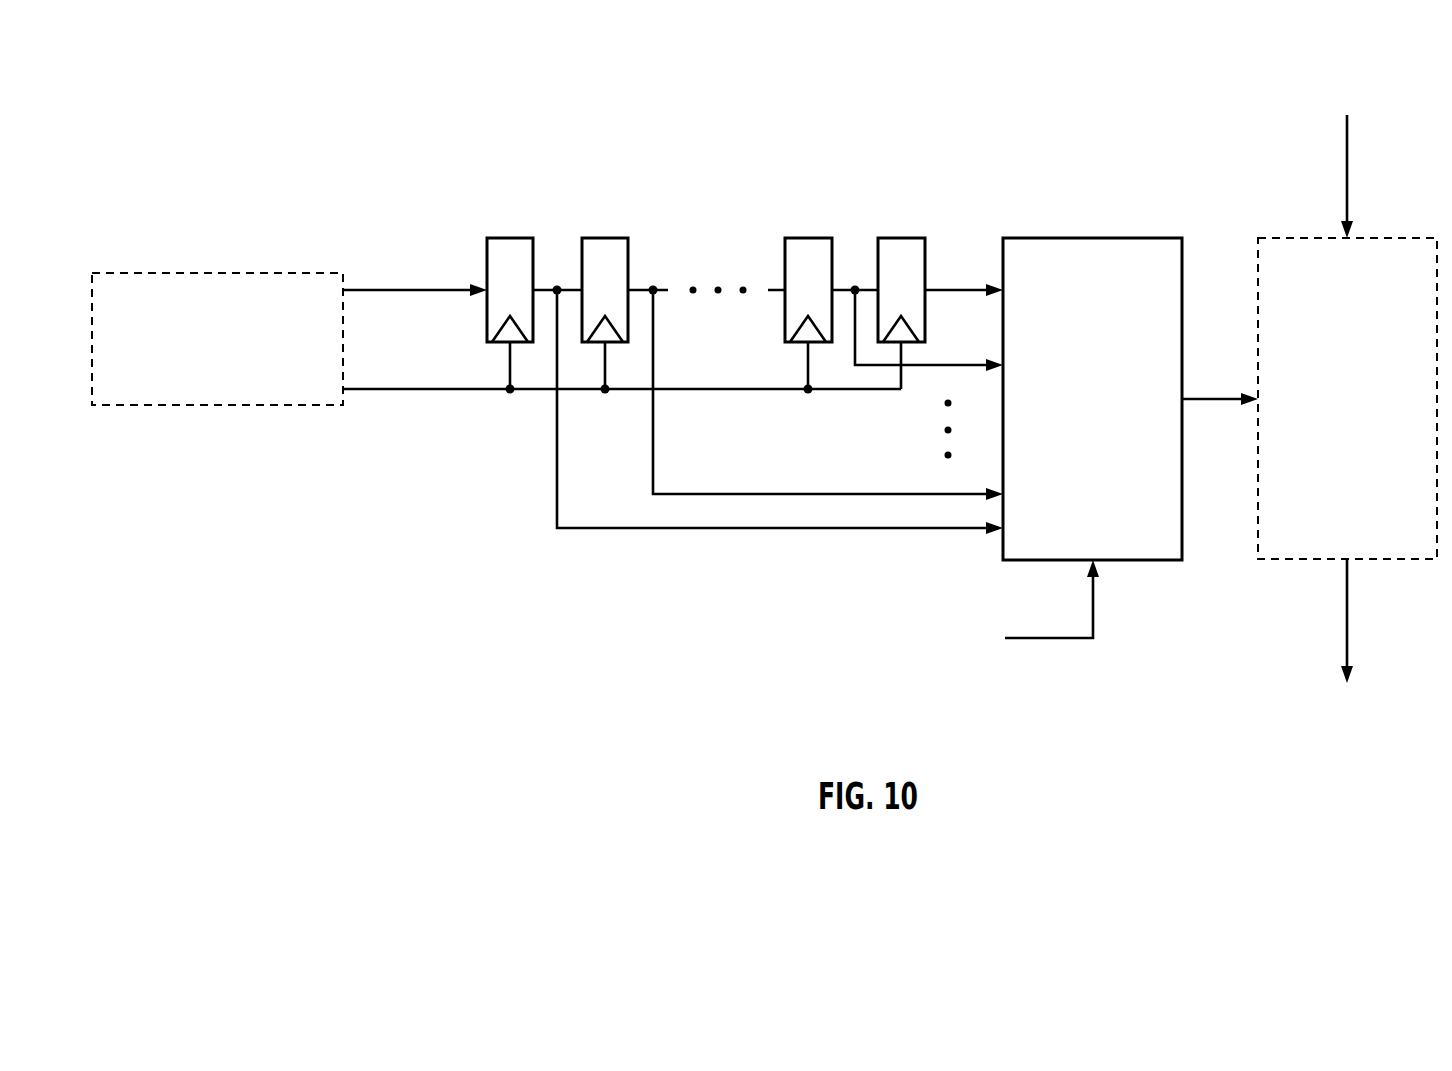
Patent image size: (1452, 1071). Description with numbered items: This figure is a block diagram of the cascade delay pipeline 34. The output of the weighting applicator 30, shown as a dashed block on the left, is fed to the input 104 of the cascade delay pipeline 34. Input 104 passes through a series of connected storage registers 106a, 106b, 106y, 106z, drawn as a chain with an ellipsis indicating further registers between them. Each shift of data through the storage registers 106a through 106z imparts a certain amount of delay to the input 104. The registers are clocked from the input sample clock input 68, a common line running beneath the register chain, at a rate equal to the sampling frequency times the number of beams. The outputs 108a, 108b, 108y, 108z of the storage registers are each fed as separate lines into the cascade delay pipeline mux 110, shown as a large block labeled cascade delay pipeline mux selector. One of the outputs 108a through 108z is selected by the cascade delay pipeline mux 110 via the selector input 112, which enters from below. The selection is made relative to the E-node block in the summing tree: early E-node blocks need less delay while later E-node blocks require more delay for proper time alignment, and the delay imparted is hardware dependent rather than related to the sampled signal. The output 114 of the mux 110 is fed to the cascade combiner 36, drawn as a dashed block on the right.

The weighting applicator 30 is at (275, 272).
The cascade delay pipeline 34 is at (422, 80).
The cascade combiner 36 is at (1372, 238).
The input sample clock input 68 is at (420, 392).
The input 104 is at (455, 285).
The storage register 106a is at (510, 238).
The storage register 106b is at (605, 238).
The storage register 106y is at (808, 238).
The storage register 106z is at (901, 238).
The output 108a is at (650, 532).
The output 108b is at (802, 492).
The output 108y is at (933, 368).
The output 108z is at (952, 288).
The cascade delay pipeline mux 110 is at (1105, 238).
The selector input 112 is at (1045, 641).
The output 114 is at (1186, 396).